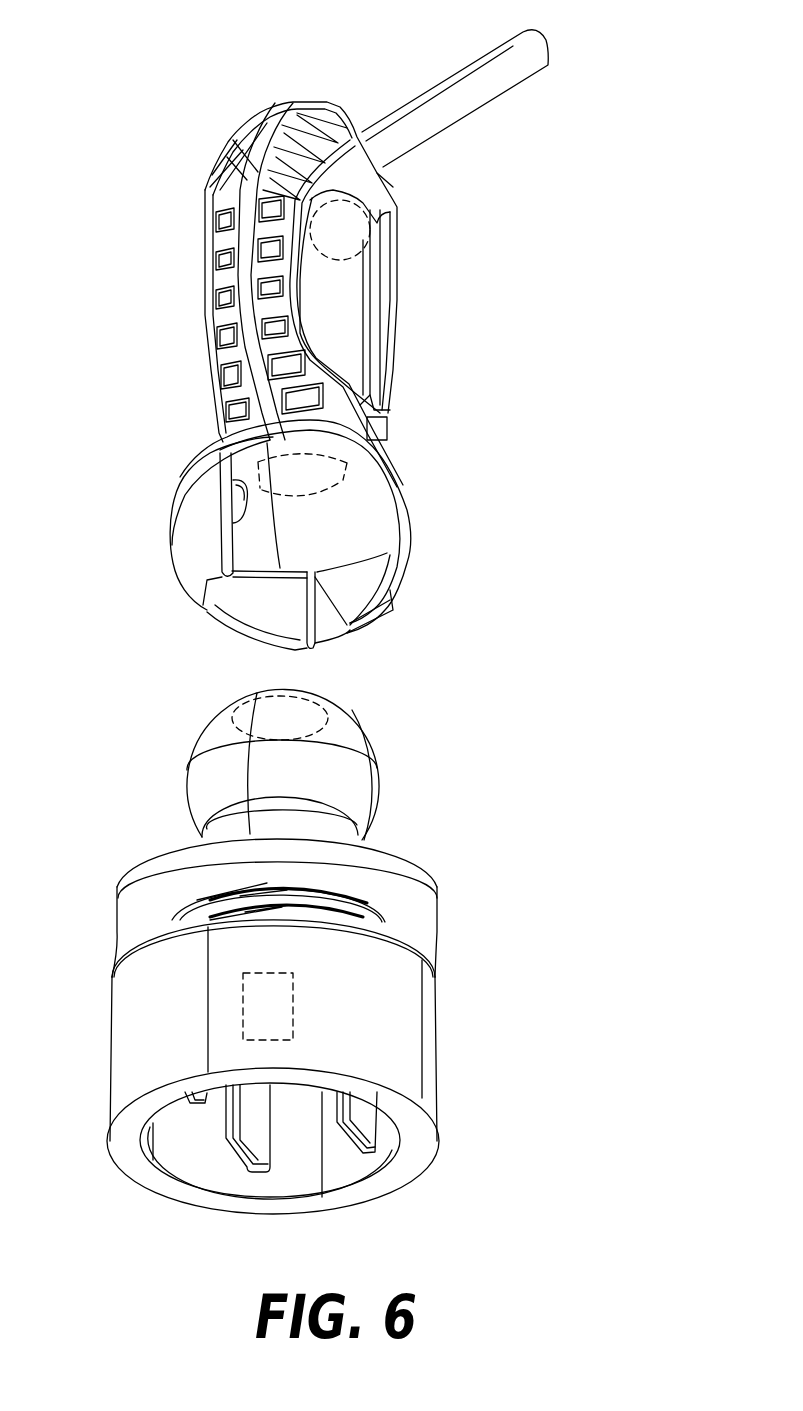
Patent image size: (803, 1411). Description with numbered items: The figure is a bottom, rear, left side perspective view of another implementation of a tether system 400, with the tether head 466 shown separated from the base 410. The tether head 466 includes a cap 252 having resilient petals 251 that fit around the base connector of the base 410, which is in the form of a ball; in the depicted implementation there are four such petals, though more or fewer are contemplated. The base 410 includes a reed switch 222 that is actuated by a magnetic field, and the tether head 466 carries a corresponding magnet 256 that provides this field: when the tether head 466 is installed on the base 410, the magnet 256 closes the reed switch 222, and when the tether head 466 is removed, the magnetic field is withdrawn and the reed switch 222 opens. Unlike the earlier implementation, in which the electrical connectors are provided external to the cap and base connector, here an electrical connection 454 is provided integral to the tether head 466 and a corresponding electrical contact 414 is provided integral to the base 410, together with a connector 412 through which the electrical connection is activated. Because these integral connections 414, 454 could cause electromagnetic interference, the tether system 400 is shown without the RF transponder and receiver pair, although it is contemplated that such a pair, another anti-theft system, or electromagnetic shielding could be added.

The tether system 400 is at (138, 122).
The tether head 466 is at (290, 90).
The magnet 256 is at (370, 225).
The electrical connection 454 is at (342, 473).
The cap 252 is at (188, 548).
The resilient petals 251 is at (257, 641).
The base 410 is at (492, 963).
The connector 412 is at (212, 789).
The electrical contact 414 is at (320, 707).
The reed switch 222 is at (293, 990).